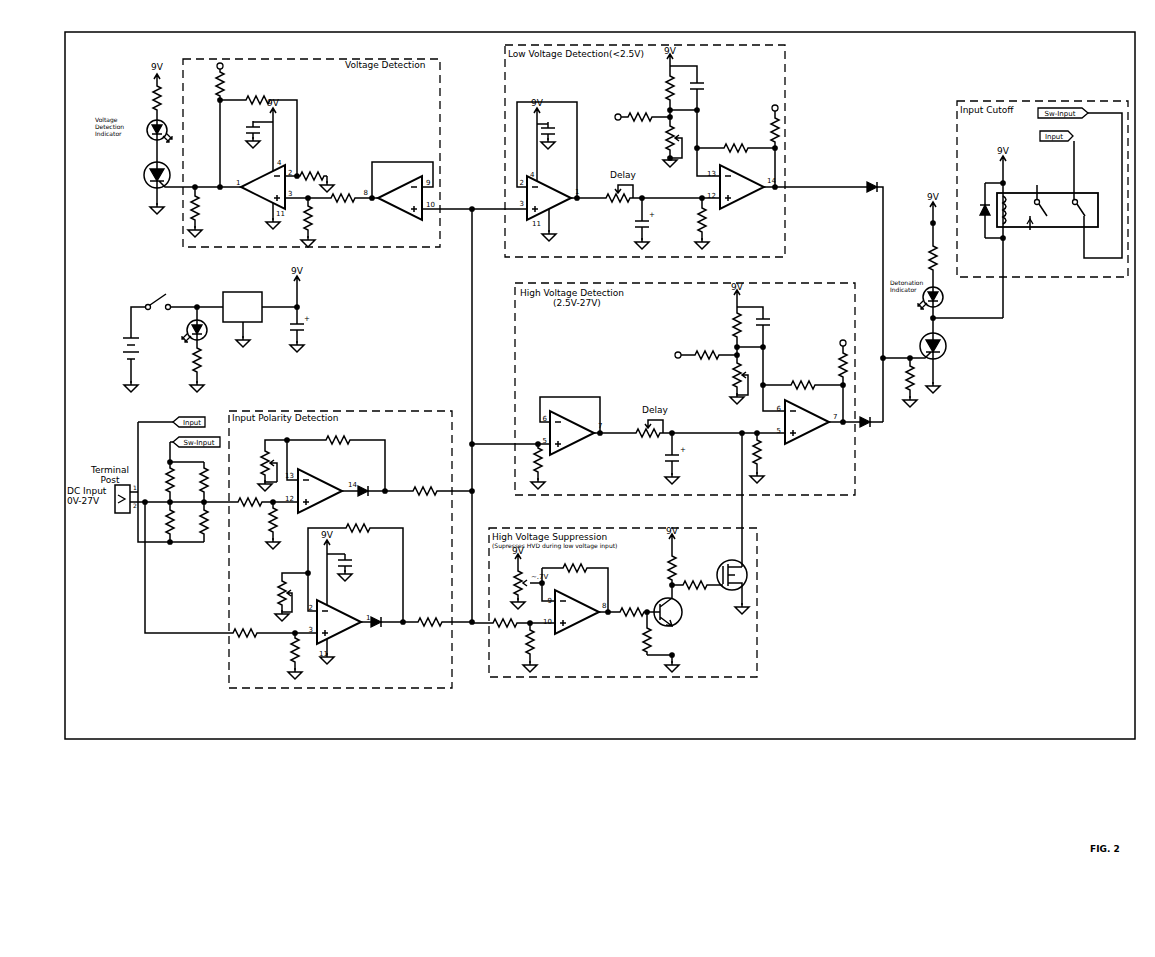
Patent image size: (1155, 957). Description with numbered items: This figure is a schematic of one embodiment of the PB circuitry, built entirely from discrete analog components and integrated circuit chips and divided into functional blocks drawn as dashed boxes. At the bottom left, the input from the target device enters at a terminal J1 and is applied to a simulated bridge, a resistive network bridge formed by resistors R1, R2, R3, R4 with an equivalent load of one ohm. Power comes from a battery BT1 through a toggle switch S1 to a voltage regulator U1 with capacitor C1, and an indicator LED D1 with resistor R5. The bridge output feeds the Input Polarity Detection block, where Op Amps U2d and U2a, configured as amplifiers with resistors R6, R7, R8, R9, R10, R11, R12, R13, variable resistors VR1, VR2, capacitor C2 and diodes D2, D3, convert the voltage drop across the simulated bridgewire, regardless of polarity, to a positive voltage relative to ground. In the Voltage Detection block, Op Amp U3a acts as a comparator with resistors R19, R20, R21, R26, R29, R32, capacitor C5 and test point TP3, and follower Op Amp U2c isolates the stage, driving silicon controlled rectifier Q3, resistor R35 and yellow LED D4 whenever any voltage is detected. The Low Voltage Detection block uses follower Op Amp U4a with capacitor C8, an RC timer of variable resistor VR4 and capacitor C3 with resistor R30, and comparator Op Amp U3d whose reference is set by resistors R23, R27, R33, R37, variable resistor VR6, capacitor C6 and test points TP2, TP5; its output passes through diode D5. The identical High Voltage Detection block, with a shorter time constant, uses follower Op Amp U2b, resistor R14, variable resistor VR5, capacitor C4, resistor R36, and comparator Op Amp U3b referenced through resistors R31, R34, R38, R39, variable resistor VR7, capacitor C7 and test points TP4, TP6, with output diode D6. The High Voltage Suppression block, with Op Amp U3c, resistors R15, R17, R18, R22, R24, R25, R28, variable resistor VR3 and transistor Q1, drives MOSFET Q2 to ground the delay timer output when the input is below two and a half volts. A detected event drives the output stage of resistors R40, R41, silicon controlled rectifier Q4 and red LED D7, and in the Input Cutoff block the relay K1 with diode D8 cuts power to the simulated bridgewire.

The resistor 1.5 ohm R1 is at (159, 480).
The resistor 0.5 ohm R2 is at (162, 522).
The resistor 0.5 ohm R3 is at (196, 480).
The resistor 1.5 ohm R4 is at (193, 522).
The resistor 4.3k R5 is at (212, 360).
The resistor 100 ohm R6 is at (250, 502).
The resistor 100 ohm R7 is at (245, 633).
The resistor 1k R8 is at (263, 520).
The resistor 1k R9 is at (285, 650).
The resistor 10k R10 is at (338, 439).
The resistor 10k R11 is at (358, 527).
The resistor 100 ohm R12 is at (430, 614).
The resistor 100 ohm R13 is at (425, 482).
The resistor 10k R14 is at (526, 460).
The resistor 100 ohm R15 is at (505, 614).
The resistor 100k R17 is at (514, 642).
The resistor 10k R18 is at (575, 559).
The resistor 1k R19 is at (343, 207).
The resistor 10k R20 is at (312, 167).
The resistor 100k R21 is at (292, 218).
The resistor 500 ohm R22 is at (632, 603).
The resistor 2k R23 is at (640, 116).
The resistor 10k R24 is at (637, 640).
The resistor 30k R25 is at (659, 568).
The resistor 680k R26 is at (258, 91).
The resistor 68k R27 is at (657, 88).
The resistor 500 ohm R28 is at (695, 577).
The resistor 2k R29 is at (210, 84).
The resistor 1M R30 is at (691, 220).
The resistor 2k R31 is at (707, 355).
The resistor 1k R32 is at (205, 208).
The resistor 1M R33 is at (736, 139).
The resistor 68k R34 is at (723, 325).
The resistor 510 ohm R35 is at (144, 98).
The resistor 1M R36 is at (768, 452).
The resistor 2k R37 is at (765, 130).
The resistor 1M R38 is at (803, 376).
The resistor 2k R39 is at (833, 365).
The resistor 1k R40 is at (900, 378).
The resistor 1k R41 is at (923, 258).
The potentiometer 10k VR1 is at (253, 463).
The potentiometer 10k VR2 is at (270, 593).
The potentiometer 10k VR3 is at (504, 583).
The delay potentiometer 10k VR4 is at (618, 208).
The delay potentiometer 10k VR5 is at (647, 443).
The potentiometer 10k VR6 is at (666, 138).
The potentiometer 10k VR7 is at (733, 374).
The capacitor 100uF C1 is at (314, 330).
The capacitor 0.1uF C2 is at (357, 566).
The capacitor 1uF C3 is at (652, 223).
The capacitor 1uF C4 is at (682, 458).
The capacitor 0.1uF C5 is at (240, 132).
The capacitor 0.1uF C6 is at (710, 86).
The capacitor 0.1uF C7 is at (776, 322).
The capacitor 0.1uF C8 is at (560, 134).
The green LED D1 is at (205, 331).
The diode 1N4148 D2 is at (365, 480).
The diode 1N4148 D3 is at (382, 612).
The yellow LED voltage detection indicator D4 is at (150, 129).
The diode 1N4148 D5 is at (872, 185).
The diode 1N4148 D6 is at (866, 421).
The red LED detonation indicator D7 is at (941, 301).
The diode 1N4148 D8 is at (967, 212).
The transistor 2N2222 Q1 is at (687, 612).
The metal oxide semiconductor field effect transistor Q2 is at (732, 564).
The SCR C106 Q3 is at (147, 175).
The SCR C106 Q4 is at (945, 351).
The voltage regulator L7809 U1 is at (243, 301).
The Op Amp U2a is at (340, 617).
The Op Amp U2b is at (572, 427).
The Op Amp U2c is at (400, 193).
The Op Amp U2d is at (321, 489).
The Op Amp U3a is at (259, 181).
The Op Amp U3b is at (807, 416).
The op amp LMC660 U3c is at (577, 608).
The Op Amp U3d is at (742, 181).
The Op Amp U4a is at (549, 192).
The toggle switch S1 is at (158, 303).
The battery 18V BT1 is at (144, 349).
The DC input terminal post J1 is at (122, 505).
The relay K1 is at (1056, 210).
The test point 2 TP2 is at (608, 118).
The test point 3 TP3 is at (227, 78).
The test point 4 TP4 is at (668, 356).
The test point 5 TP5 is at (775, 102).
The test point 6 TP6 is at (843, 337).